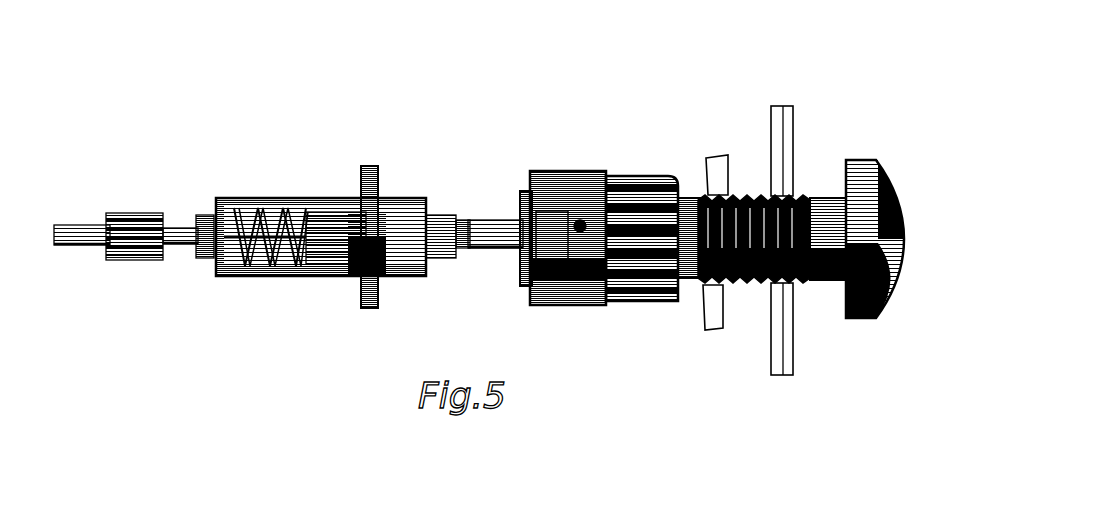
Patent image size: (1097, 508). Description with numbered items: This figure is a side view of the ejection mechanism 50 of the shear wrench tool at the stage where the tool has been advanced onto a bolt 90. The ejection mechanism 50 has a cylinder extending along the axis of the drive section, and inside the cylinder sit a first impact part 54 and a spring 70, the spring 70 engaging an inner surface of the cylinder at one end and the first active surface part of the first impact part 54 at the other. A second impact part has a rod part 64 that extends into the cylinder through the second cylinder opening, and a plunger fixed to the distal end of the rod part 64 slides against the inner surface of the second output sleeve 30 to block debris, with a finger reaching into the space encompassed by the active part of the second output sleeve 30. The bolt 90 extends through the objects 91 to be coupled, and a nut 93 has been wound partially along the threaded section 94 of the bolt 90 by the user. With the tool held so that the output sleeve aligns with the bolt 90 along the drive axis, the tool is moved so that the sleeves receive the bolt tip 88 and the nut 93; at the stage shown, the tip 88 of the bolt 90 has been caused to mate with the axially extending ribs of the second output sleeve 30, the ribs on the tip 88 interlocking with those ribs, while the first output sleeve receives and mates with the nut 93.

The second output sleeve 30 is at (565, 298).
The ejection mechanism 50 is at (325, 315).
The first impact part 54 is at (277, 190).
The rod part 64 is at (410, 192).
The spring 70 is at (248, 190).
The tip 88 is at (638, 170).
The bolt 90 is at (870, 310).
The objects to be coupled 91 is at (786, 98).
The nut 93 is at (707, 147).
The threaded section 94 is at (738, 277).